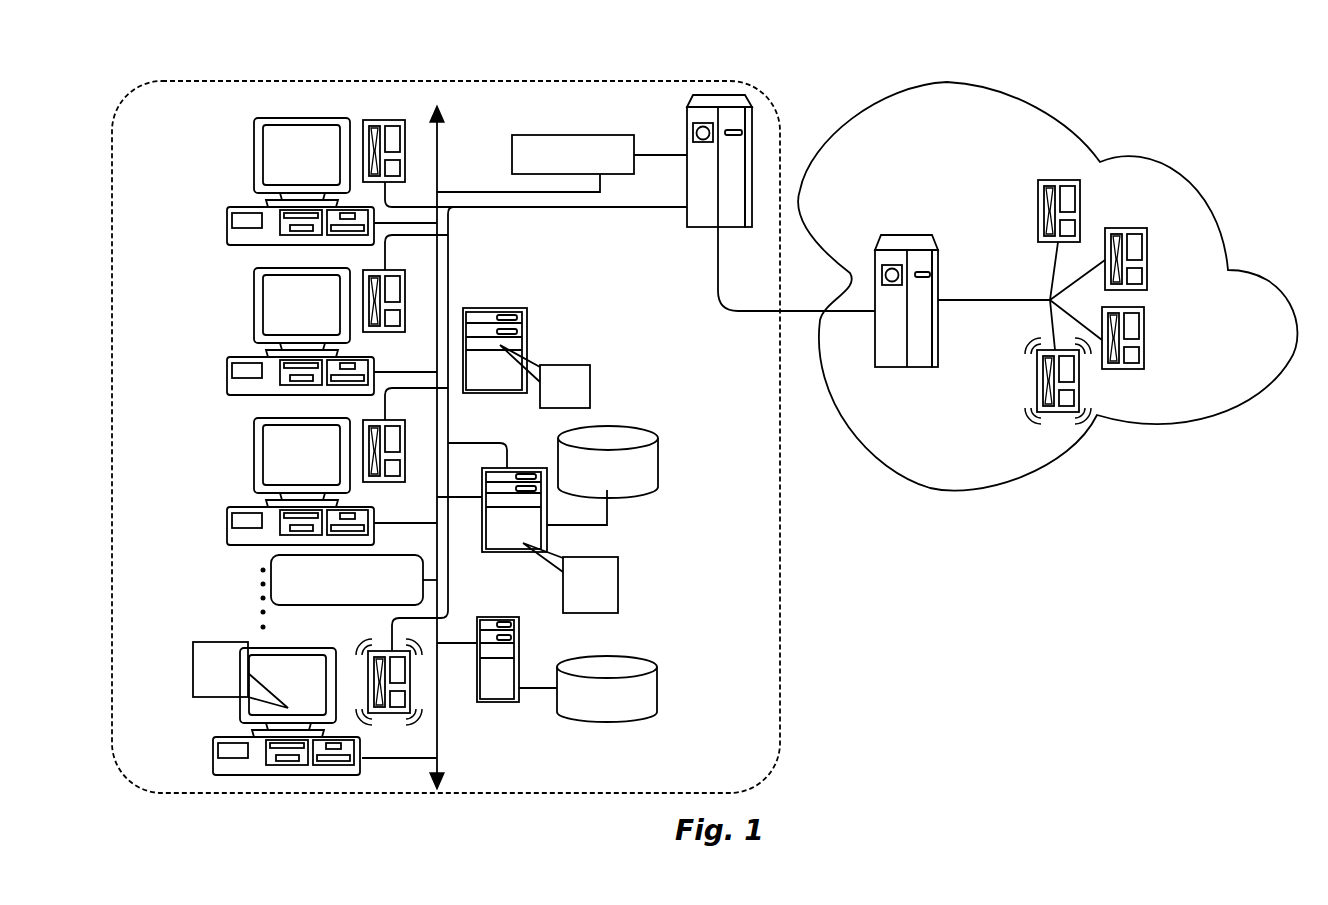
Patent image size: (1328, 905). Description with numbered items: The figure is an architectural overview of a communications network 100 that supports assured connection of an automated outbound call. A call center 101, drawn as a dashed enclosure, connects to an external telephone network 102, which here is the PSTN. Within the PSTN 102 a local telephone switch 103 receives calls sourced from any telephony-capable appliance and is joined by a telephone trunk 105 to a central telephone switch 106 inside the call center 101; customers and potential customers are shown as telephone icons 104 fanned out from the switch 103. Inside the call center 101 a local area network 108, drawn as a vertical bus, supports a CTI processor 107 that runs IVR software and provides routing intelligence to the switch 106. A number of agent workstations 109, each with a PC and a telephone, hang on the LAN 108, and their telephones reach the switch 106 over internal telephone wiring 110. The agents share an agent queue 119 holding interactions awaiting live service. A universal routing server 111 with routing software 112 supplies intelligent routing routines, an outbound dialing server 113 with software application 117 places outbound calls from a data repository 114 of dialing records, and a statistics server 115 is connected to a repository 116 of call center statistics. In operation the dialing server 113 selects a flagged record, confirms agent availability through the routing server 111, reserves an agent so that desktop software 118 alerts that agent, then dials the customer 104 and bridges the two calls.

The communications network 100 is at (866, 628).
The call center 101 is at (389, 76).
The external telephone network (PSTN) 102 is at (1101, 432).
The local telephone switch 103 is at (906, 235).
The customer telephones 104 is at (1178, 308).
The telephone trunk 105 is at (758, 313).
The central telephone switch 106 is at (720, 95).
The CTI processor 107 is at (585, 135).
The local area network (LAN) 108 is at (443, 728).
The agent workstations 109 is at (198, 386).
The internal telephone wiring 110 is at (535, 209).
The universal routing server 111 is at (529, 331).
The SW (routing service software) 112 is at (590, 372).
The outbound dialing server 113 is at (512, 554).
The data repository (dialing records) 114 is at (634, 465).
The statistics server 115 is at (497, 702).
The data repository (call center statistics) 116 is at (608, 657).
The SW application 117 is at (618, 573).
The desktop software 118 is at (225, 642).
The agent queue 119 is at (358, 606).